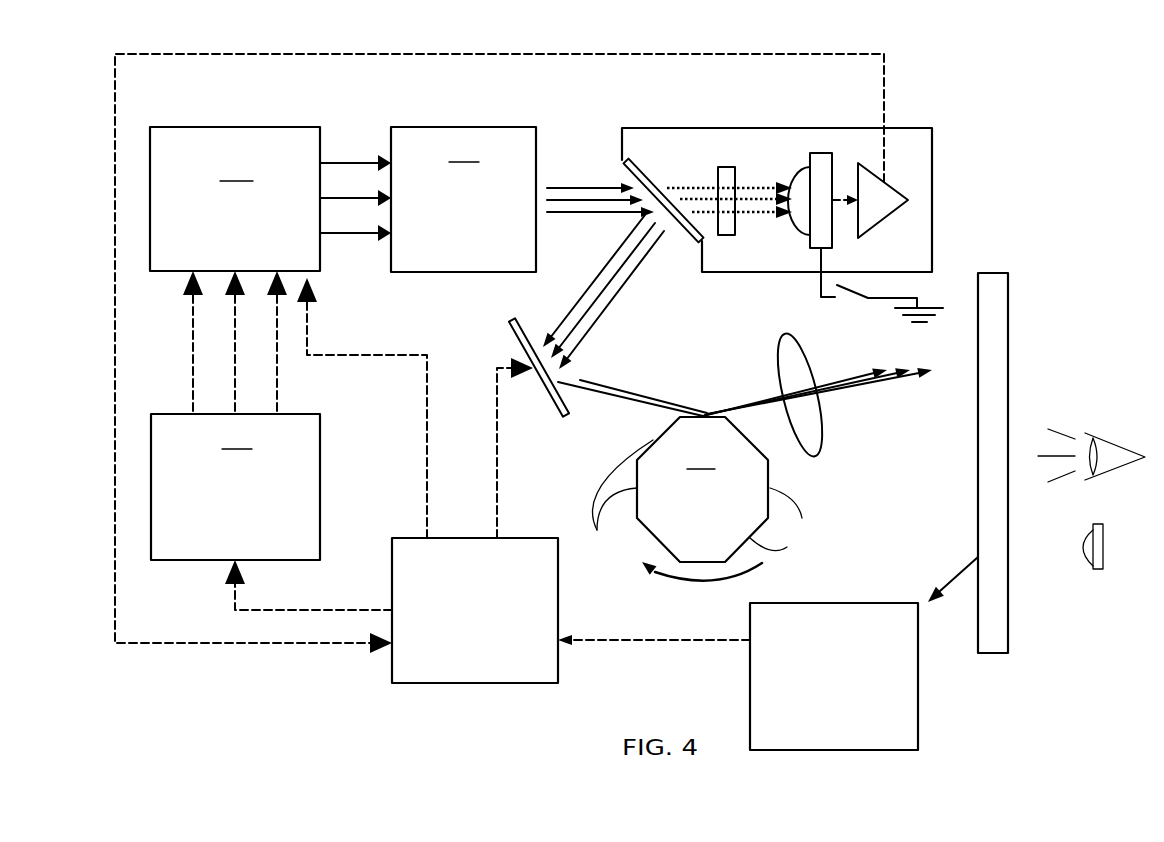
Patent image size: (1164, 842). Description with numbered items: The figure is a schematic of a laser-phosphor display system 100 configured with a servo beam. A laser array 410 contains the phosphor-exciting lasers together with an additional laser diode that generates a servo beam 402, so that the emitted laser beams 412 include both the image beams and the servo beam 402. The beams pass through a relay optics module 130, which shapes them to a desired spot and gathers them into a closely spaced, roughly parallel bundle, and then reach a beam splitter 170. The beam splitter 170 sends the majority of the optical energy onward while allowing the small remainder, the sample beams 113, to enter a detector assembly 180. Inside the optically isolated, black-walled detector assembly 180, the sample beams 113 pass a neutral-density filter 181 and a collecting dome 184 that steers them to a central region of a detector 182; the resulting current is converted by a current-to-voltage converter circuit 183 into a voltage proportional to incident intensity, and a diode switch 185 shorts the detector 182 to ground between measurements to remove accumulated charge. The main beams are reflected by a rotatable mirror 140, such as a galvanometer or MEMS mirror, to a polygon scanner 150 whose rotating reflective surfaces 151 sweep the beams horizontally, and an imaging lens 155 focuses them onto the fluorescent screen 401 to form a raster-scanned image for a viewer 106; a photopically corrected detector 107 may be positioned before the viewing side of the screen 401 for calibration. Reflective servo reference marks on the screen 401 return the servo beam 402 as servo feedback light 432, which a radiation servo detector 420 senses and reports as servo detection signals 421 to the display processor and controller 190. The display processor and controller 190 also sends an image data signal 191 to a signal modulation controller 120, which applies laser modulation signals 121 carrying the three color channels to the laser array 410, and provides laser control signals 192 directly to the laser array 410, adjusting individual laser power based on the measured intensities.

The display system 100 is at (965, 109).
The laser array 410 is at (235, 199).
The laser beams 412 is at (368, 160).
The servo beam 402 is at (353, 236).
The relay optics module 130 is at (463, 199).
The beam splitter 170 is at (627, 173).
The sample beams 113 is at (689, 170).
The detector assembly 180 is at (782, 216).
The neutral-density filter 181 is at (730, 167).
The detector 182 is at (810, 153).
The collecting dome 184 is at (797, 230).
The current-to-voltage converter circuit 183 is at (872, 230).
The diode switch 185 is at (857, 295).
The mirror 140 is at (545, 402).
The polygon scanner 150 is at (745, 474).
The reflective surfaces 151 is at (704, 499).
The imaging lens 155 is at (823, 438).
The fluorescent screen 401 is at (1008, 368).
The viewer 106 is at (1127, 443).
The photopically corrected detector 107 is at (1097, 569).
The servo feedback light 432 is at (950, 577).
The radiation servo detector 420 is at (795, 603).
The servo detection signals 421 is at (643, 643).
The display processor and controller 190 is at (433, 685).
The image data signal 191 is at (307, 608).
The laser control signals 192 is at (425, 430).
The signal modulation controller 120 is at (235, 487).
The laser modulation signals 121 is at (190, 341).